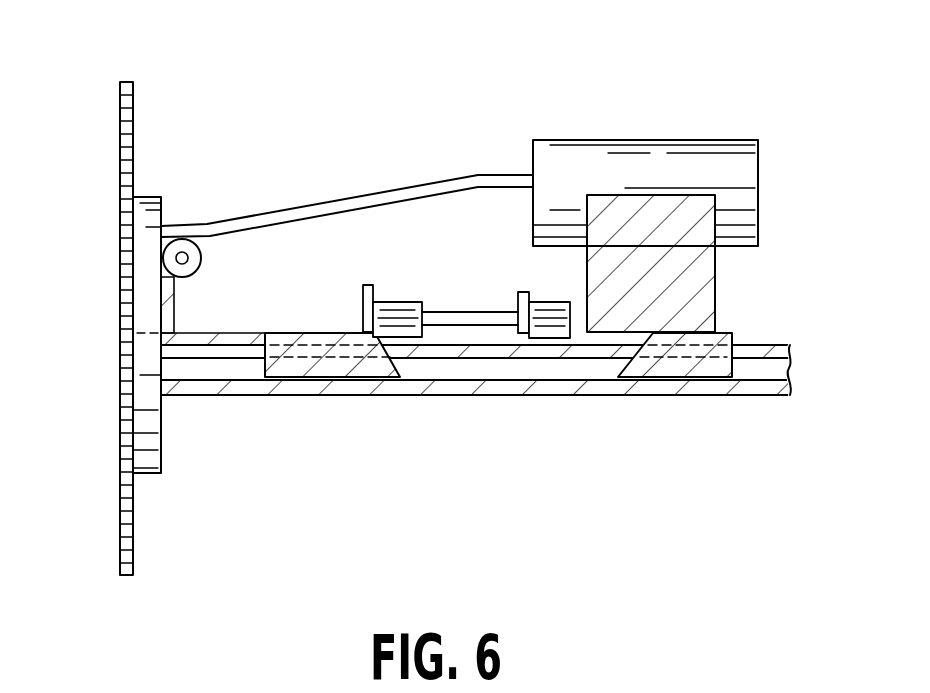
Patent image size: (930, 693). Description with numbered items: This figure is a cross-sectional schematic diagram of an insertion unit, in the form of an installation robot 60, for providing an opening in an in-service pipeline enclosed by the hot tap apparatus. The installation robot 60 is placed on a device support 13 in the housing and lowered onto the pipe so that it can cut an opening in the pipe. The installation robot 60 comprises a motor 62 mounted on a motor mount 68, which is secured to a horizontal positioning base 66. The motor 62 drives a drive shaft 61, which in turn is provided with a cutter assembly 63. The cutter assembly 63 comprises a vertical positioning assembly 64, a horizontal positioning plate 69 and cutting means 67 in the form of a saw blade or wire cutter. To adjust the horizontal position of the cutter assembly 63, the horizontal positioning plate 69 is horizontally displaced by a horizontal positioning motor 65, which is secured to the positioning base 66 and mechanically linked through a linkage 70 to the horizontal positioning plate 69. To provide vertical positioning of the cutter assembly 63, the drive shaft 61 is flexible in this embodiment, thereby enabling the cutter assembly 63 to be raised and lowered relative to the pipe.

The device support 13 is at (668, 395).
The installation robot 60 is at (718, 113).
The drive shaft 61 is at (415, 185).
The motor 62 is at (608, 140).
The cutter assembly 63 is at (140, 262).
The vertical positioning assembly 64 is at (182, 238).
The horizontal positioning motor 65 is at (557, 345).
The horizontal positioning base 66 is at (497, 358).
The cutting means 67 is at (120, 413).
The motor mount 68 is at (717, 280).
The horizontal positioning plate 69 is at (248, 333).
The linkage 70 is at (400, 302).